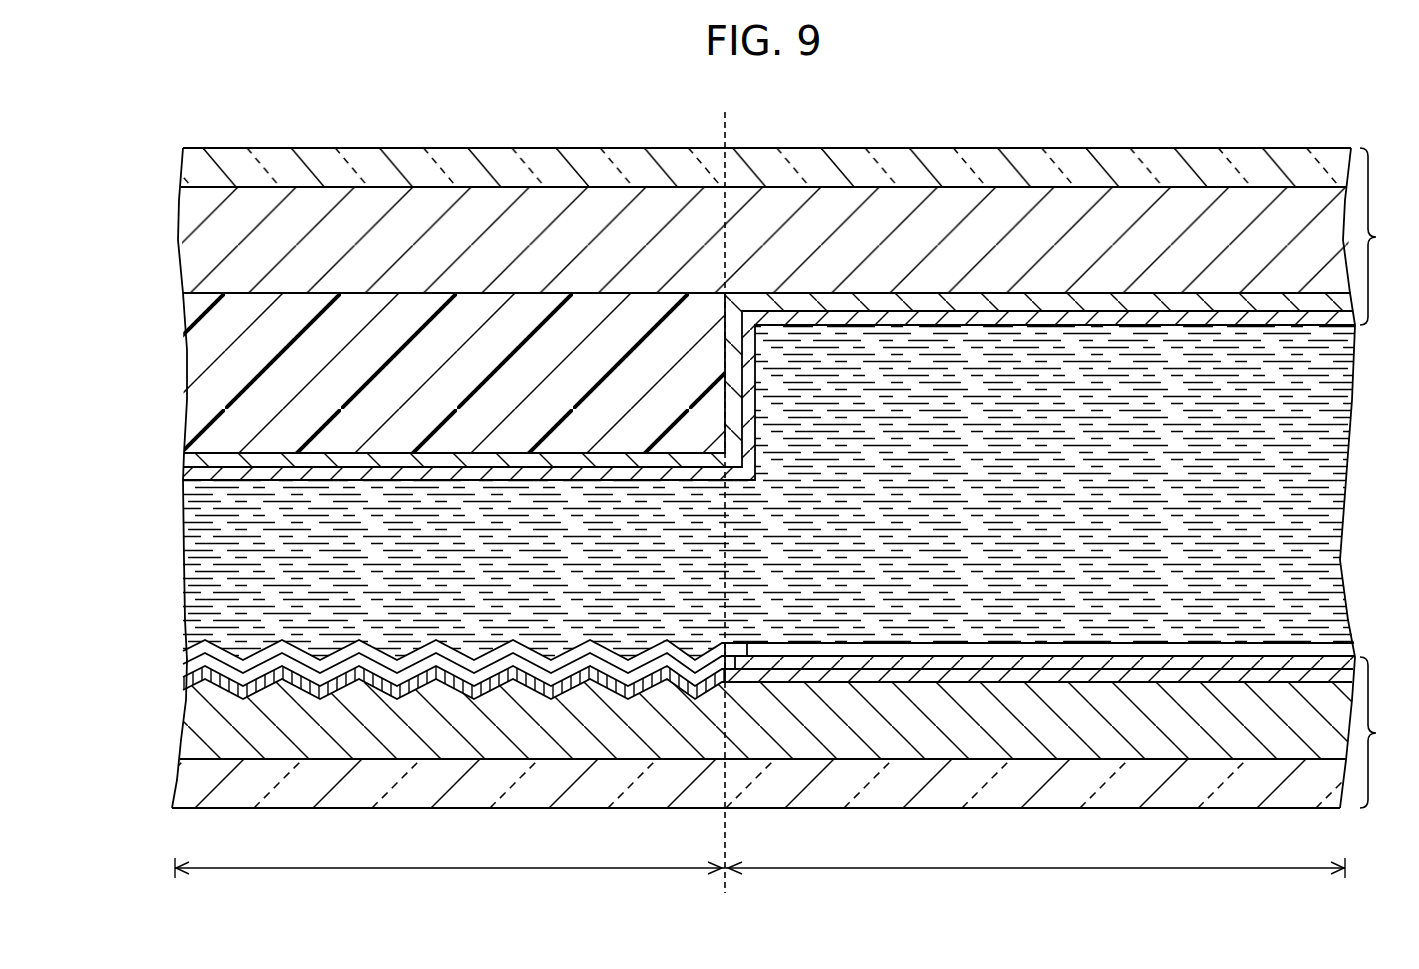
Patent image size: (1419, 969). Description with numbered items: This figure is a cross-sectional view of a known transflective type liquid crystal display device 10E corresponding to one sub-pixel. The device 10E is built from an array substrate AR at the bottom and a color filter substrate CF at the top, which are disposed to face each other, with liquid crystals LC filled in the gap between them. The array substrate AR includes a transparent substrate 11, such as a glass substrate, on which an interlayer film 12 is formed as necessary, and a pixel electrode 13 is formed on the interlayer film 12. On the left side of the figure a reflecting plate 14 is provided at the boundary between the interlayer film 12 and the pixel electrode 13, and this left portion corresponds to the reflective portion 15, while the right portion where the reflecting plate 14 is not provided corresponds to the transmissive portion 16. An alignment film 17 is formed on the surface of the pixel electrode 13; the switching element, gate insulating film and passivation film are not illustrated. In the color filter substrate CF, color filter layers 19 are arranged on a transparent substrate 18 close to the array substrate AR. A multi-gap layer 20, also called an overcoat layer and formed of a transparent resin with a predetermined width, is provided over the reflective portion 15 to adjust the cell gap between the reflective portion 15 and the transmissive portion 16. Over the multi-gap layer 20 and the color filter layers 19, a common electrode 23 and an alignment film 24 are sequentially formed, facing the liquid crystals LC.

The transflective type liquid crystal display device 10E is at (835, 97).
The transparent substrate 11 is at (185, 787).
The interlayer film 12 is at (190, 743).
The pixel electrode 13 is at (190, 672).
The reflecting plate 14 is at (190, 688).
The reflective portion 15 is at (450, 859).
The transmissive portion 16 is at (1035, 859).
The alignment film 17 is at (190, 662).
The transparent substrate 18 is at (1201, 160).
The color filter layers 19 is at (200, 210).
The multi-gap layer 20 is at (200, 352).
The common electrode 23 is at (190, 458).
The alignment film 24 is at (190, 475).
The color filter substrate CF is at (1385, 236).
The liquid crystals LC is at (1340, 450).
The array substrate AR is at (1385, 732).